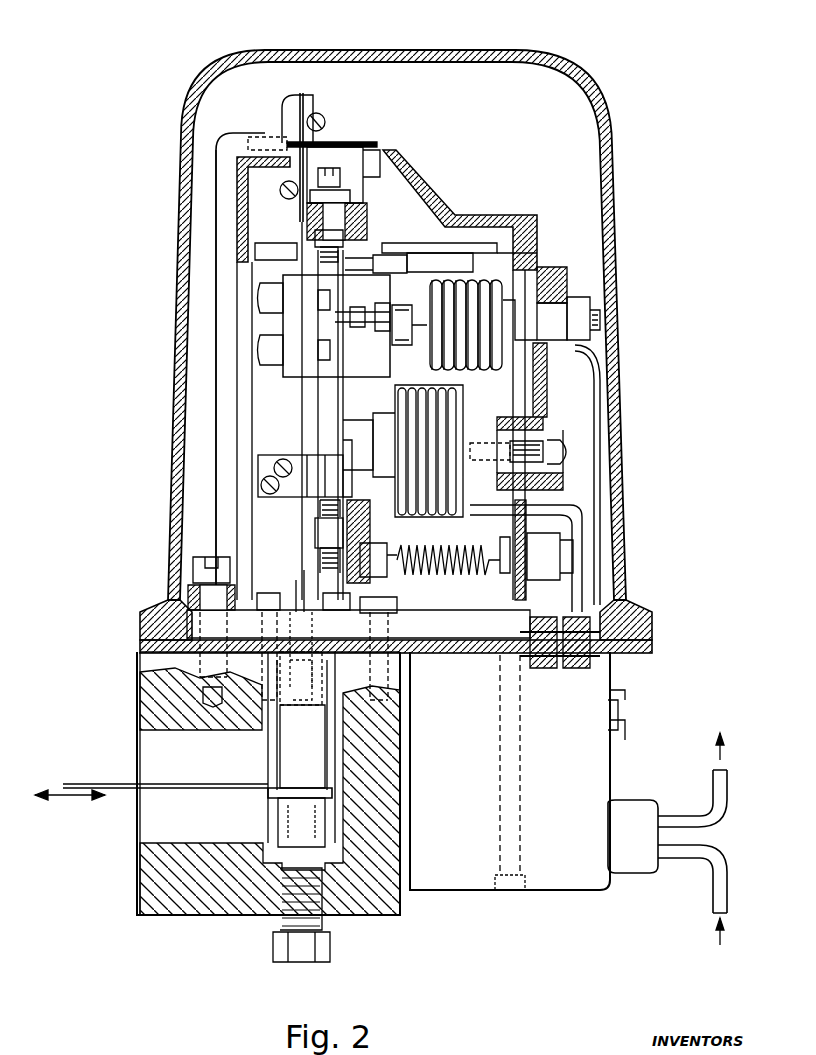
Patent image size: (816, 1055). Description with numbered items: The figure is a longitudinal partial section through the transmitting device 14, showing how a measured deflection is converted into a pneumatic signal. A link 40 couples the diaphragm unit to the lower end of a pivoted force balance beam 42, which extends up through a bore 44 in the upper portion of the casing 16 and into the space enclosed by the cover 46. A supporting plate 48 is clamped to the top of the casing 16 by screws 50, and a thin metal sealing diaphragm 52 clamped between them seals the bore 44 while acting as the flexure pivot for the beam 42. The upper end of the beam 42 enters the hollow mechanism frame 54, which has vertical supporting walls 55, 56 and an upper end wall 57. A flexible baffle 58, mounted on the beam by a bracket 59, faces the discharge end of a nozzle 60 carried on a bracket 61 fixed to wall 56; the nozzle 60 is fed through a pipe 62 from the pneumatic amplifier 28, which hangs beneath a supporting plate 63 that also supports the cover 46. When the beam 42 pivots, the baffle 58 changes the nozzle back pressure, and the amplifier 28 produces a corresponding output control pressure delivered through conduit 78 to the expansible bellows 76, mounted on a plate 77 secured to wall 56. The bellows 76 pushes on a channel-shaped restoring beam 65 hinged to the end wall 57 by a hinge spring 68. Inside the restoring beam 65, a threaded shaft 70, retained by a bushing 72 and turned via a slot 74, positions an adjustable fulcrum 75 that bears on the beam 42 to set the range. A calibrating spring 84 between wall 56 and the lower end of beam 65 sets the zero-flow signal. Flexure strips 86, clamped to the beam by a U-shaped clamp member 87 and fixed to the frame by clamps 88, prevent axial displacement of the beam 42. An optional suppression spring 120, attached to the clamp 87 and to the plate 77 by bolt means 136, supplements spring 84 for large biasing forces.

The transmitting device 14 is at (212, 66).
The casing 16 is at (188, 915).
The pneumatic amplifier 28 is at (610, 760).
The link 40 is at (200, 784).
The force balance beam 42 is at (301, 747).
The bore 44 is at (266, 730).
The cover 46 is at (170, 445).
The supporting plate 48 is at (470, 650).
The screws 50 is at (192, 572).
The sealing diaphragm 52 is at (235, 650).
The mechanism frame 54 is at (218, 170).
The vertical supporting wall 55 is at (213, 345).
The vertical supporting wall 56 is at (540, 243).
The upper end wall 57 is at (422, 195).
The flexible baffle 58 is at (340, 365).
The bracket 59 is at (290, 500).
The nozzle 60 is at (362, 256).
The bracket 61 is at (398, 250).
The pipe 62 is at (605, 355).
The supporting plate 63 is at (636, 648).
The restoring beam 65 is at (380, 520).
The hinge spring 68 is at (303, 142).
The threaded shaft 70 is at (312, 255).
The bushing 72 is at (318, 222).
The slot 74 is at (332, 172).
The adjustable fulcrum 75 is at (342, 541).
The expansible bellows 76 is at (440, 520).
The plate 77 is at (547, 402).
The conduit 78 is at (565, 515).
The calibrating spring 84 is at (465, 575).
The flexure strips 86 is at (300, 447).
The U-shaped clamp member 87 is at (395, 382).
The clamps 88 is at (292, 590).
The suppression spring 120 is at (466, 372).
The bolt means 136 is at (583, 295).